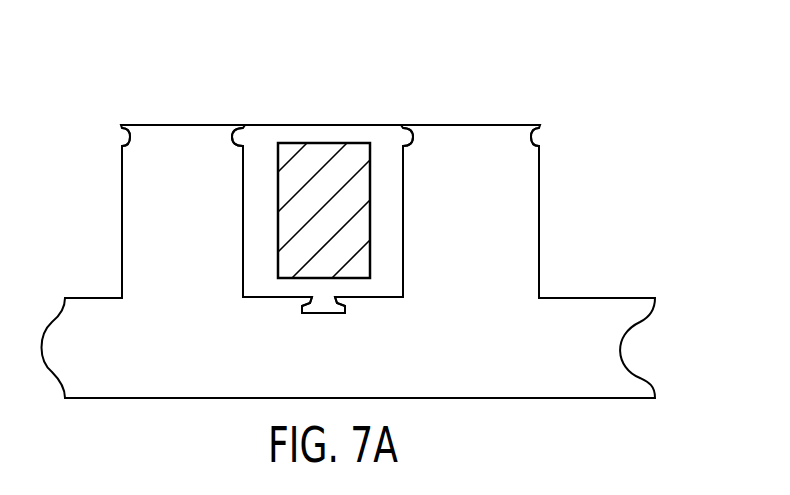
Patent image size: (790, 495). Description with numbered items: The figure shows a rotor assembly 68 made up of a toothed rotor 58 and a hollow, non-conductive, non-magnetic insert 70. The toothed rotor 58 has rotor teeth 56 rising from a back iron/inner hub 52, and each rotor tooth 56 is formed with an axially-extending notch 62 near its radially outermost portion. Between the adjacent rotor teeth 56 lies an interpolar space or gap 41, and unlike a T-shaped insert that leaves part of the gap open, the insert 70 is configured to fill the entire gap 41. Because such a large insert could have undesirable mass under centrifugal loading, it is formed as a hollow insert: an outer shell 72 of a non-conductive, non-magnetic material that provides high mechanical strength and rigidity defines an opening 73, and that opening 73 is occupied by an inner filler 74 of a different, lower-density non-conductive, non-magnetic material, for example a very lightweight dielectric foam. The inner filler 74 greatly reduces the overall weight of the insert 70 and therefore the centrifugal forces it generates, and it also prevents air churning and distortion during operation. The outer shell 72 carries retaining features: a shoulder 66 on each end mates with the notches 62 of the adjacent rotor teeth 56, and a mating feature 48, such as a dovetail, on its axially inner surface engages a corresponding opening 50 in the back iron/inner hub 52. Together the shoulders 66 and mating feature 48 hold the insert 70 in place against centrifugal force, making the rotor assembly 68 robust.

The interpolar space or gap 41 is at (245, 305).
The mating feature 48 is at (348, 306).
The opening 50 is at (318, 319).
The back iron/inner hub 52 is at (597, 298).
The rotor teeth 56 is at (122, 222).
The toothed rotor 58 is at (580, 176).
The axially-extending notches 62 is at (118, 140).
The shoulder 66 is at (232, 128).
The rotor assembly 68 is at (453, 83).
The non-conductive, non-magnetic insert 70 is at (327, 113).
The outer shell 72 is at (255, 227).
The opening 73 is at (295, 130).
The inner filler 74 is at (345, 213).